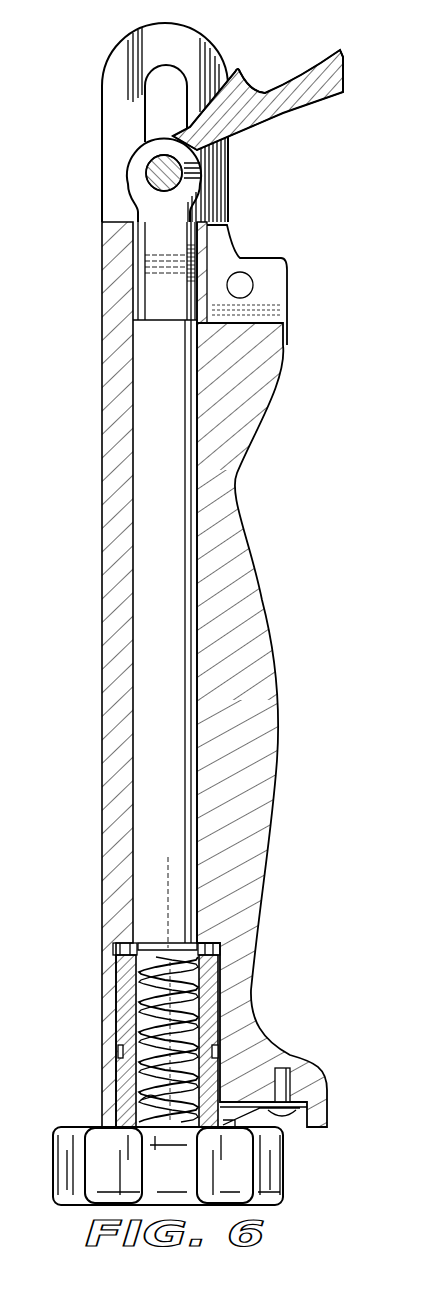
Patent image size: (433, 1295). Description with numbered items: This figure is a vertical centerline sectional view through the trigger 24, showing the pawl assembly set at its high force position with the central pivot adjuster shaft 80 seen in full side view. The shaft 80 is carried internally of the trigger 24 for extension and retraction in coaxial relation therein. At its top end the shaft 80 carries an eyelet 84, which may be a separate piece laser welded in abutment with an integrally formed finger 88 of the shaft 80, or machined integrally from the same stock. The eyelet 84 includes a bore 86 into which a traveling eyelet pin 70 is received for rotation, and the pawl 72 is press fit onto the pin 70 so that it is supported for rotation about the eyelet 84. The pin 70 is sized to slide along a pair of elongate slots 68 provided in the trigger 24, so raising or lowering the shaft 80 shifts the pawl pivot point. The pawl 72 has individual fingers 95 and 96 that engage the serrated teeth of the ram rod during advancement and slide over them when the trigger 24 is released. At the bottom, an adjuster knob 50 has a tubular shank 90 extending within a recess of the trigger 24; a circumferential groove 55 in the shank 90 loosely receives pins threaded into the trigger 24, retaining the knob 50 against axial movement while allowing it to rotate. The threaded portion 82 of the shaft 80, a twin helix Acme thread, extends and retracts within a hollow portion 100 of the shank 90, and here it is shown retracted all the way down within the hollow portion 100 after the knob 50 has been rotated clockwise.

The trigger 24 is at (275, 665).
The knob 50 is at (285, 1162).
The circumferential groove 55 is at (118, 1045).
The elongate slots 68 is at (146, 100).
The traveling eyelet pin 70 is at (157, 177).
The pawl 72 is at (283, 113).
The pivot adjuster shaft 80 is at (177, 463).
The threaded portion 82 is at (193, 995).
The eyelet 84 is at (197, 197).
The bore 86 is at (150, 170).
The finger 88 is at (140, 287).
The tubular shank 90 is at (123, 1073).
The finger 95 is at (238, 72).
The finger 96 is at (342, 48).
The hollow portion 100 is at (150, 1097).